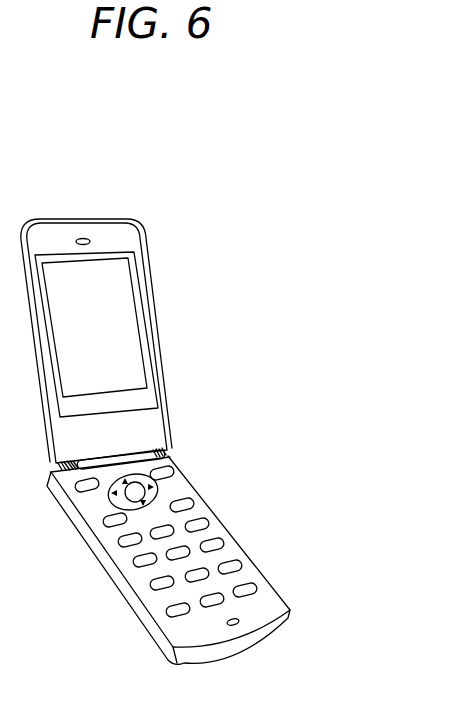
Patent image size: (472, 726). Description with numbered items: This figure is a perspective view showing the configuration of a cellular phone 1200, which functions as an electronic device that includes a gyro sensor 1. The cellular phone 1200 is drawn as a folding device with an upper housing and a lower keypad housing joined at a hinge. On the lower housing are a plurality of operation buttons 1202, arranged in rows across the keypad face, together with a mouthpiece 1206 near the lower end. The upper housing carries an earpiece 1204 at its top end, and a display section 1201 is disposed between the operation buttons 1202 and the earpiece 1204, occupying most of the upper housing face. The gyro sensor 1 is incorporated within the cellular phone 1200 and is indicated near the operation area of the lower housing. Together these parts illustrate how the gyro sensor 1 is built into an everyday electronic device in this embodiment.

The cellular phone 1200 is at (174, 188).
The display section 1201 is at (125, 320).
The operation buttons 1202 is at (222, 532).
The earpiece 1204 is at (87, 237).
The mouthpiece 1206 is at (240, 619).
The gyro sensor 1 is at (173, 486).